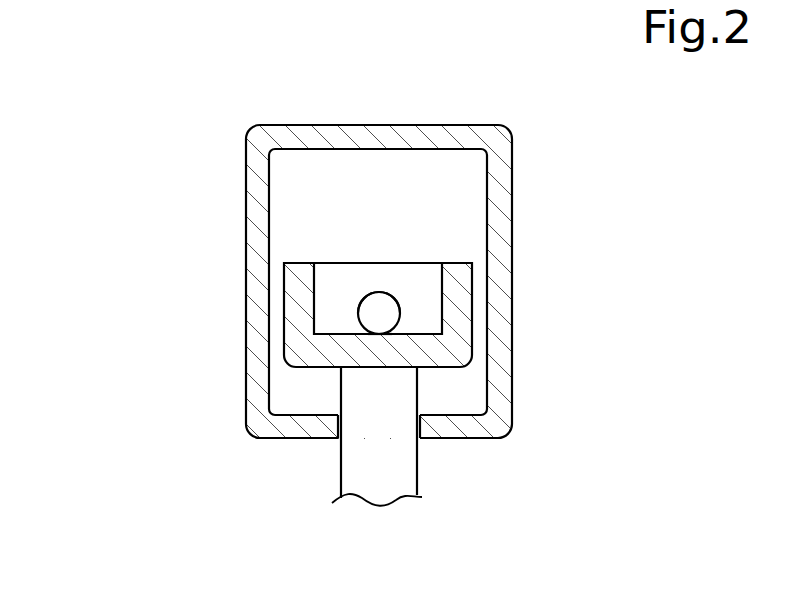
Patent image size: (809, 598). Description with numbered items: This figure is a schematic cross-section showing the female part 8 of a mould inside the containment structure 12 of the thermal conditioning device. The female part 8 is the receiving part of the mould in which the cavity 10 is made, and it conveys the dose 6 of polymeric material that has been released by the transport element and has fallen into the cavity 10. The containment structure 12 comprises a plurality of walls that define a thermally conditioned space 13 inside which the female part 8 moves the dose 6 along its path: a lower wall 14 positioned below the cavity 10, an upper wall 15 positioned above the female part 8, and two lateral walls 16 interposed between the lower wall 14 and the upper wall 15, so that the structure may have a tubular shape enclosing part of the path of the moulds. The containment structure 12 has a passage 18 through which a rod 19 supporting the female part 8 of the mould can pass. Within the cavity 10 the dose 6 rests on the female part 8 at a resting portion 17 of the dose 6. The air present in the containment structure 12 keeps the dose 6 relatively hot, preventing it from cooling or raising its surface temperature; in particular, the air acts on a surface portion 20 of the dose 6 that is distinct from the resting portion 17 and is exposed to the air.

The dose 6 is at (392, 290).
The female part 8 is at (470, 315).
The cavity 10 is at (335, 336).
The containment structure 12 is at (247, 250).
The thermally conditioned space 13 is at (389, 182).
The lower wall 14 is at (277, 440).
The upper wall 15 is at (307, 125).
The lateral walls 16 is at (513, 240).
The resting portion 17 is at (380, 335).
The passage 18 is at (335, 431).
The rod 19 is at (387, 477).
The surface portion 20 is at (363, 293).